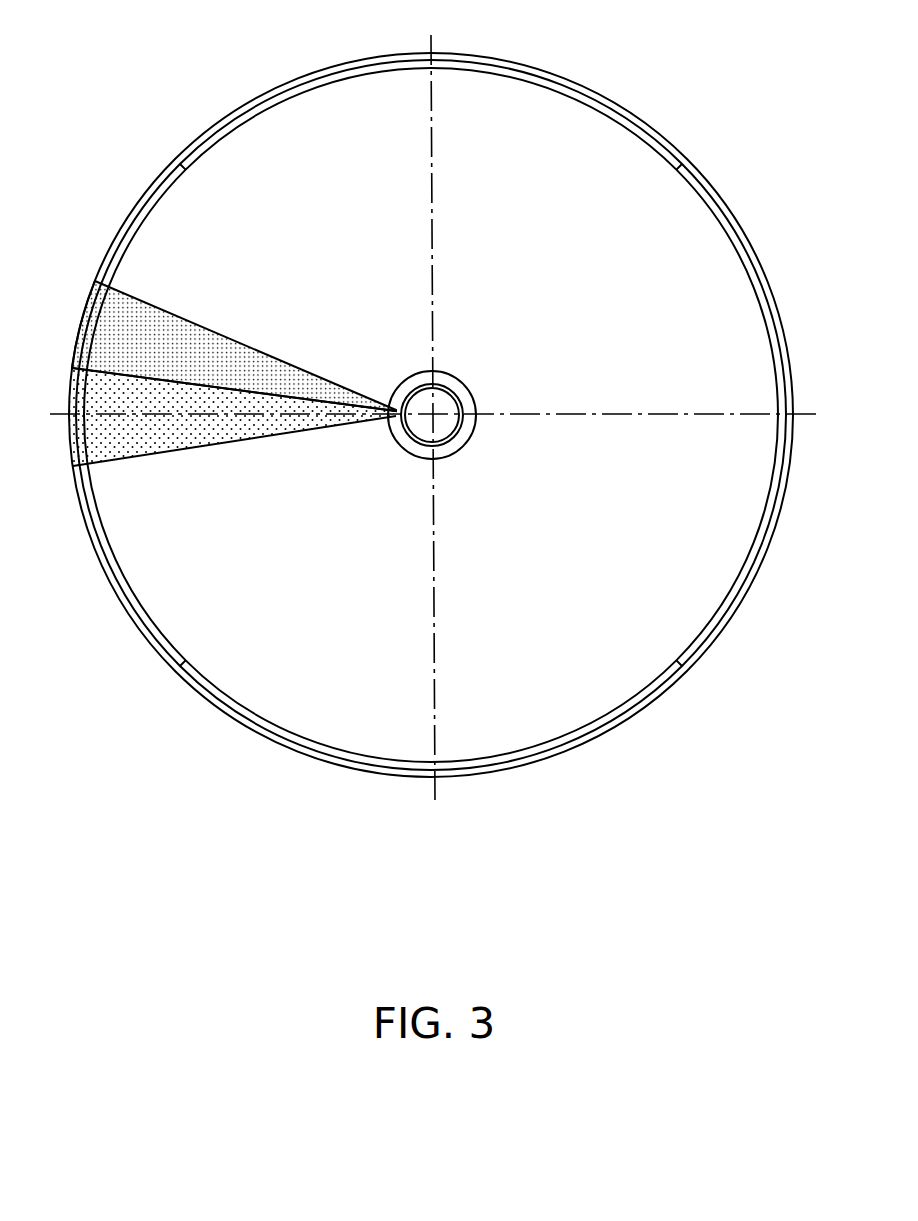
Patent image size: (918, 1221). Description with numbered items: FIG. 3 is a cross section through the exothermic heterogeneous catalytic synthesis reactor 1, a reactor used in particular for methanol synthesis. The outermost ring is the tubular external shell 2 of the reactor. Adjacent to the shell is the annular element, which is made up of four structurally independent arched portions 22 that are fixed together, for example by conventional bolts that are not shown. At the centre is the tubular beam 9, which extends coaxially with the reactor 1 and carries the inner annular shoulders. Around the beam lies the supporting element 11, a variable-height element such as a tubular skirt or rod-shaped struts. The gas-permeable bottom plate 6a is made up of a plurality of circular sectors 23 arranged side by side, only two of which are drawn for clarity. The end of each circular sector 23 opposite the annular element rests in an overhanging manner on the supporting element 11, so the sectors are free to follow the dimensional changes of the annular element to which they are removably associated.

The exothermic heterogeneous catalytic synthesis reactor 1 is at (213, 827).
The tubular external shell 2 is at (585, 744).
The arched portions 22 is at (542, 79).
The circular sectors 23 is at (262, 333).
The tubular beam 9 is at (445, 400).
The supporting element 11 is at (452, 449).
The bottom plate 6a is at (345, 446).